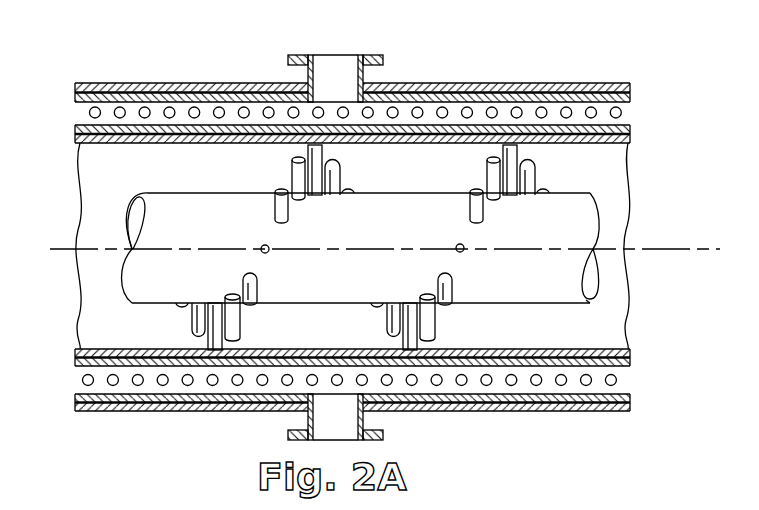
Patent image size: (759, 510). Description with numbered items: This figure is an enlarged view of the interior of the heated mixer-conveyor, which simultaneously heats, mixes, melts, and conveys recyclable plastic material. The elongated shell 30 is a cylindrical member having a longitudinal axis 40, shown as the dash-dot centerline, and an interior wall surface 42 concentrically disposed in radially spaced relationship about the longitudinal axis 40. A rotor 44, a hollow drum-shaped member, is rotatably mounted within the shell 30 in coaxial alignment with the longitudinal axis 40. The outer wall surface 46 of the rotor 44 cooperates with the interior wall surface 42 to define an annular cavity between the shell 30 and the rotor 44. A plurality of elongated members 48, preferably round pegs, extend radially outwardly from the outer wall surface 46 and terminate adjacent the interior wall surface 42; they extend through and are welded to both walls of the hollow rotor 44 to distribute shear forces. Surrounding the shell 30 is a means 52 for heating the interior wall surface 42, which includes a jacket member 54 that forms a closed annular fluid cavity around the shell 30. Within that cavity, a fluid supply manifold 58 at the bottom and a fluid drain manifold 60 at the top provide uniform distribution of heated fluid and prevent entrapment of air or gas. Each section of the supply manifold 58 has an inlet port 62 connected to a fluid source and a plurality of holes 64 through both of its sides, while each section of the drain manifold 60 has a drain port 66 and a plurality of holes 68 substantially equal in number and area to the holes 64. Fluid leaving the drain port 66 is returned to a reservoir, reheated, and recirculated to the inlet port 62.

The elongated shell 30 is at (382, 180).
The longitudinal axis 40 is at (662, 247).
The interior wall surface 42 is at (502, 348).
The rotor 44 is at (405, 231).
The outer wall surface 46 is at (210, 193).
The elongated members 48 is at (240, 315).
The means for heating 52 is at (438, 415).
The jacket member 54 is at (594, 409).
The fluid supply manifold 58 is at (175, 388).
The fluid drain manifold 60 is at (482, 107).
The inlet port 62 is at (305, 421).
The holes 64 is at (619, 380).
The drain port 66 is at (356, 55).
The holes 68 is at (218, 107).